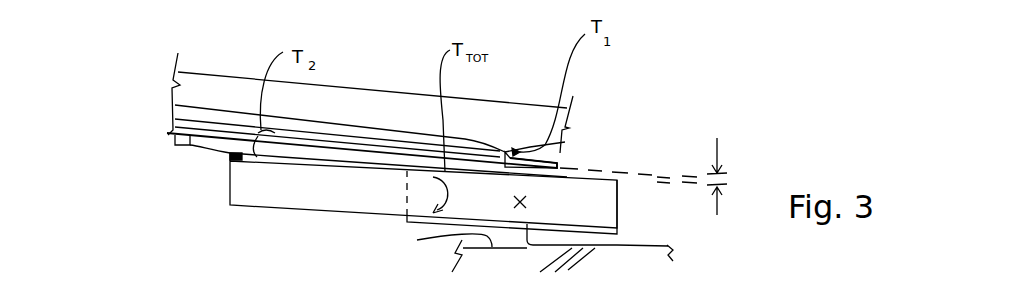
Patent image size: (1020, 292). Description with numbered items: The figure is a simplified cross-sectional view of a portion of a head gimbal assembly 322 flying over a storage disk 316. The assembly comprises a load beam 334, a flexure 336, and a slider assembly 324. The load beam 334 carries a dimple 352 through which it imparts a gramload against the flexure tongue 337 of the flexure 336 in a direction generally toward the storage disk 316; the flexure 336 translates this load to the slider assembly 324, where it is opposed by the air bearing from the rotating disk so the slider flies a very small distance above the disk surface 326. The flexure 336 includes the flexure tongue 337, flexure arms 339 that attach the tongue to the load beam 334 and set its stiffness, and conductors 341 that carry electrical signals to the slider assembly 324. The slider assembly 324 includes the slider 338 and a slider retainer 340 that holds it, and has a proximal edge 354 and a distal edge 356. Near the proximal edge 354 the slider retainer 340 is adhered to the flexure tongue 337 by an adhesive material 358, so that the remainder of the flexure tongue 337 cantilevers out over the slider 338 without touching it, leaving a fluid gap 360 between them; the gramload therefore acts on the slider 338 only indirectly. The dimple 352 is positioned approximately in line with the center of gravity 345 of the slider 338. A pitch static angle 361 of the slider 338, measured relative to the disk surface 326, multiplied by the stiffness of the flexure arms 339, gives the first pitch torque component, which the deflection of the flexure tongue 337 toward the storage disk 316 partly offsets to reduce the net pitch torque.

The storage disk 316 is at (503, 256).
The head gimbal assembly 322 is at (601, 77).
The slider assembly 324 is at (662, 188).
The disk surface 326 is at (438, 238).
The load beam 334 is at (225, 83).
The flexure 336 is at (112, 102).
The flexure tongue 337 is at (227, 155).
The slider 338 is at (617, 230).
The flexure arms 339 is at (187, 117).
The slider retainer 340 is at (617, 200).
The conductors 341 is at (188, 147).
The center of gravity 345 is at (523, 202).
The dimple 352 is at (505, 149).
The proximal edge 354 is at (228, 183).
The distal edge 356 is at (618, 192).
The adhesive material 358 is at (227, 158).
The fluid gap 360 is at (722, 166).
The pitch static angle 361 is at (533, 221).